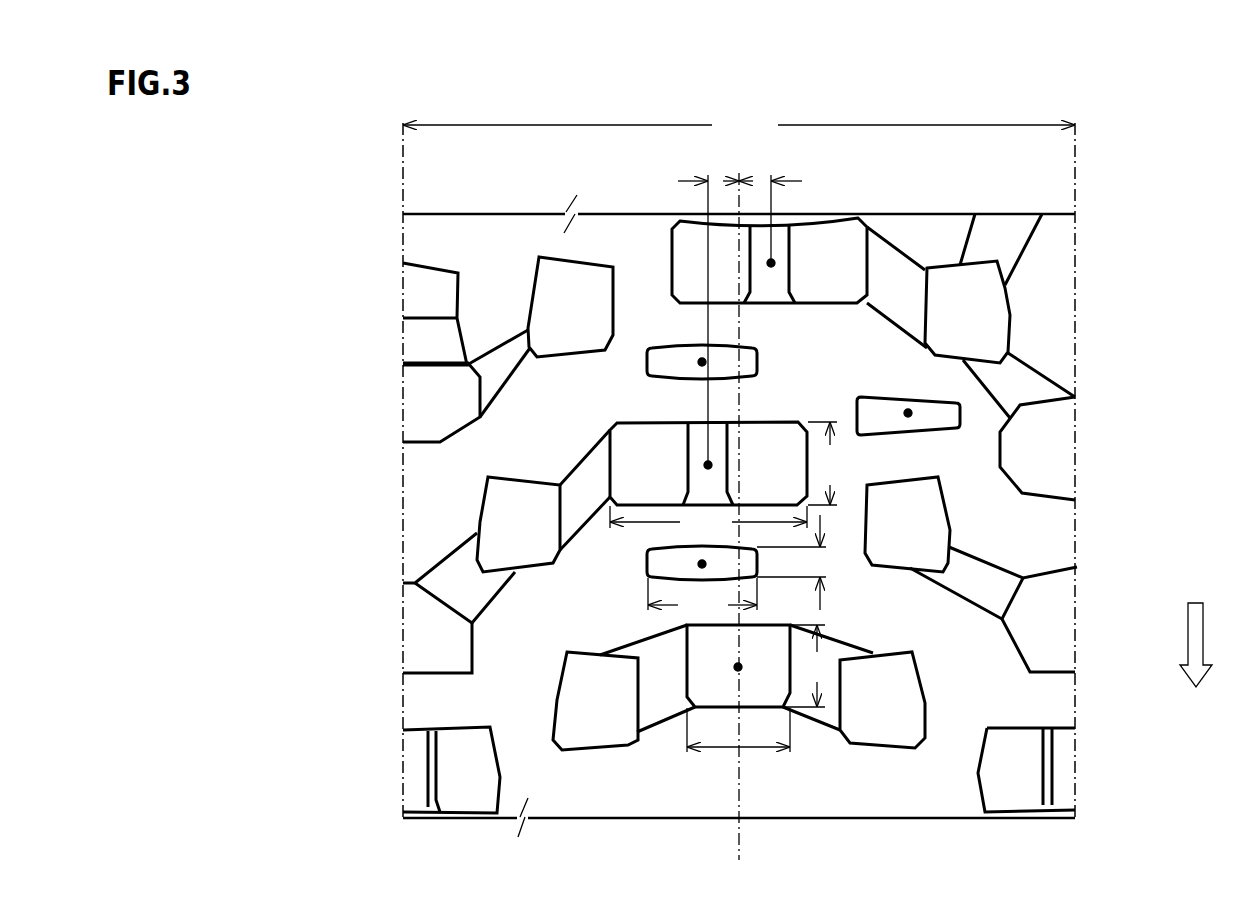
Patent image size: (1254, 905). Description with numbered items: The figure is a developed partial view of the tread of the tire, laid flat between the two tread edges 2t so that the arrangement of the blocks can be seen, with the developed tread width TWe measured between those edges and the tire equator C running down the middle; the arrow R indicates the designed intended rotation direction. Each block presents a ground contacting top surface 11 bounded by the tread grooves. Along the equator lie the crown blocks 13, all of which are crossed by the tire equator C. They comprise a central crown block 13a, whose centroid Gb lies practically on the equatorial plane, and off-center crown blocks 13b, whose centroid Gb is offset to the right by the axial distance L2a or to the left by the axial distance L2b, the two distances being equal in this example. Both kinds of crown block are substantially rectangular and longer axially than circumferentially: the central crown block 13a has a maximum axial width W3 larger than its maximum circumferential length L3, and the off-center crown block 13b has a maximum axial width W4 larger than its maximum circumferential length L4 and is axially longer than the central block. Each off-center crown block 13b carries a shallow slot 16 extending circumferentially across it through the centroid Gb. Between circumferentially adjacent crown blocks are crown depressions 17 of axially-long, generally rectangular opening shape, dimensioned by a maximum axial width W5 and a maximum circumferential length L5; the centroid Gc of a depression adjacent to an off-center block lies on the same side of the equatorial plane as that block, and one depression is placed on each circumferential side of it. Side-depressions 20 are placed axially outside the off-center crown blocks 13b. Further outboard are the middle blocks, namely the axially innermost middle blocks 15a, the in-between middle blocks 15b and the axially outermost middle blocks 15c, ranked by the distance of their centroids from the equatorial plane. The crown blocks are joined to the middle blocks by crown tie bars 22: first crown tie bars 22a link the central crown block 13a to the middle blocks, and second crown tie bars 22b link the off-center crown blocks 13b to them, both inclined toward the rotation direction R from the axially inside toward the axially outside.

The tread edge 2t is at (403, 175).
The ground contacting top surface 11 is at (757, 645).
The crown block 13 is at (838, 270).
The central crown block 13a is at (713, 677).
The off-center crown block 13b is at (640, 465).
The axially innermost middle block 15a is at (582, 728).
The in-between middle block 15b is at (563, 293).
The axially outermost middle block 15c is at (522, 514).
The shallow slot 16 is at (772, 284).
The crown depression 17 is at (668, 362).
The side-depression 20 is at (887, 405).
The crown tie bar 22 is at (893, 258).
The first crown tie bar 22a is at (658, 693).
The second crown tie bar 22b is at (588, 489).
The centroid of block Gb is at (771, 263).
The centroid of crown depression Gc is at (702, 360).
The tire equator C is at (737, 532).
The developed tread width TWe is at (739, 126).
The axial distance of right-side off-center crown block L2a is at (762, 206).
The axial distance of left-side off-center crown block L2b is at (715, 307).
The maximum circumferential length of central crown block L3 is at (805, 666).
The maximum circumferential length of off-center crown block L4 is at (825, 463).
The maximum circumferential length of crown depression L5 is at (794, 562).
The maximum axial width of central crown block W3 is at (738, 744).
The maximum axial width of off-center crown block W4 is at (708, 521).
The maximum axial width of crown depression W5 is at (702, 598).
The intended rotation direction R is at (1202, 645).